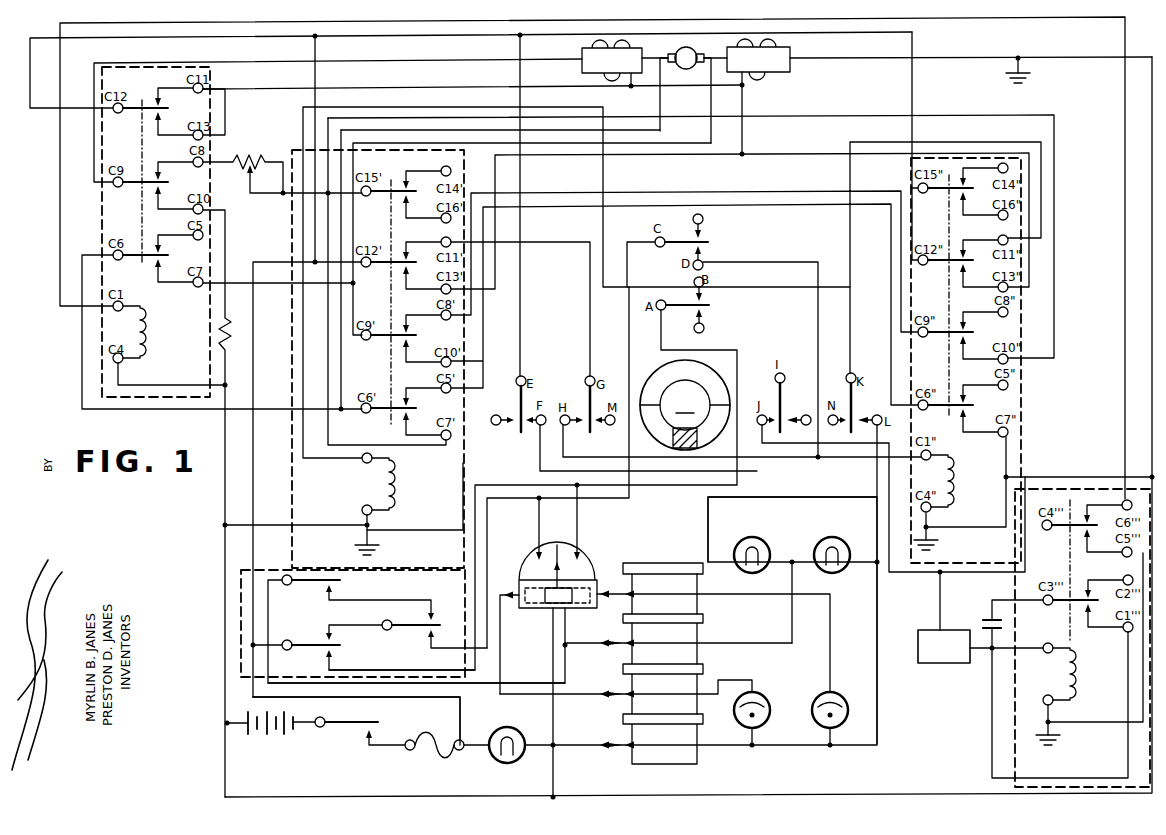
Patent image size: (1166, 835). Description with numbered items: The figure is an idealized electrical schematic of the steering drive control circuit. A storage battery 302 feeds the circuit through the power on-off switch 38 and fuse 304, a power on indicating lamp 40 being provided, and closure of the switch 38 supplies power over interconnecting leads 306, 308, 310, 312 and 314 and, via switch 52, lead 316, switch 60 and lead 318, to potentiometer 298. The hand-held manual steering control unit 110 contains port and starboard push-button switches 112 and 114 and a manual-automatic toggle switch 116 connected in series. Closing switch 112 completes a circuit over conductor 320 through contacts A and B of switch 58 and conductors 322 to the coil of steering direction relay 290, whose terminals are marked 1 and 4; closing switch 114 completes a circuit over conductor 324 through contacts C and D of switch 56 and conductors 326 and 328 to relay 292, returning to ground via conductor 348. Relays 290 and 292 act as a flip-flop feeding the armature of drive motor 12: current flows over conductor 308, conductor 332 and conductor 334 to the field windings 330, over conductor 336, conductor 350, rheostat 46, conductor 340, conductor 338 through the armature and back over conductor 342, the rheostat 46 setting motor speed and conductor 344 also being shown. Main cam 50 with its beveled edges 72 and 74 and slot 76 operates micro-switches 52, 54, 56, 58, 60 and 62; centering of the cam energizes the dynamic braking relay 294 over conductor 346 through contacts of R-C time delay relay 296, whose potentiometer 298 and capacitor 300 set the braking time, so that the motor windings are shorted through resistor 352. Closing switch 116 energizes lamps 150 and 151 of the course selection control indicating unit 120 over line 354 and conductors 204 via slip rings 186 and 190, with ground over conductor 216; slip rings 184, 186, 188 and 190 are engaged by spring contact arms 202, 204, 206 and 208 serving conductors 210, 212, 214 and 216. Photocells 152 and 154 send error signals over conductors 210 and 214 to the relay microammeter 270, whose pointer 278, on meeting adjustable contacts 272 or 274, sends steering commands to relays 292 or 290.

The drive motor 12 is at (690, 48).
The power on-off switch 38 is at (355, 720).
The power on indicating lamp 40 is at (500, 760).
The turning rate control rheostat 46 is at (246, 158).
The main steering shaft control cam 50 is at (685, 405).
The micro-switch 52 is at (513, 410).
The micro-switch 54 is at (588, 400).
The micro-switch 56 is at (716, 239).
The micro-switch 58 is at (715, 308).
The micro-switch 60 is at (788, 403).
The micro-switch 62 is at (844, 400).
The beveled edge portion 72 is at (657, 395).
The beveled edge portion 74 is at (715, 395).
The cam engaging slot 76 is at (675, 437).
The manual steering control unit 110 is at (241, 600).
The port push-button switch 112 is at (312, 640).
The starboard push-button switch 114 is at (414, 632).
The manual-automatic toggle switch 116 is at (318, 582).
The course selection control indicating unit 120 is at (801, 749).
The lamp 150 is at (750, 537).
The lamp 151 is at (826, 537).
The photoelectric cell 152 is at (766, 695).
The photoelectric cell 154 is at (843, 696).
The slip ring 184 is at (700, 603).
The slip ring 186 is at (700, 653).
The slip ring 188 is at (700, 703).
The slip ring 190 is at (700, 760).
The spring contact arm 202 is at (650, 594).
The spring contact arm 204 is at (650, 643).
The spring contact arm 206 is at (650, 694).
The spring contact arm 208 is at (650, 745).
The conductor 210 is at (626, 590).
The conductor 212 is at (621, 642).
The conductor 214 is at (620, 693).
The conductor 216 is at (620, 744).
The relay microammeter control mechanism 270 is at (531, 612).
The starboard contact 272 is at (539, 528).
The port contact 274 is at (578, 520).
The center contact indicator 278 is at (561, 570).
The steering direction motor control relay 290 is at (468, 352).
The steering direction motor control relay 292 is at (1025, 415).
The dynamic braking relay 294 is at (100, 238).
The R-C time delay control relay 296 is at (1014, 698).
The potentiometer 298 is at (937, 664).
The capacitor 300 is at (984, 620).
The storage battery 302 is at (268, 736).
The fuse 304 is at (437, 752).
The conductor 306 is at (444, 695).
The conductor 308 is at (252, 460).
The conductor 310 is at (292, 230).
The conductor 312 is at (480, 31).
The conductor 314 is at (524, 180).
The conductor 316 is at (758, 471).
The conductor 318 is at (888, 480).
The conductor 320 is at (688, 485).
The conductor 322 is at (602, 232).
The conductor 324 is at (487, 518).
The conductor 326 is at (818, 316).
The conductor 328 is at (838, 450).
The field winding 330 is at (582, 62).
The conductor 332 is at (493, 282).
The conductor 334 is at (745, 141).
The conductor 336 is at (680, 87).
The conductor 338 is at (662, 93).
The conductor 340 is at (376, 446).
The conductor 342 is at (711, 125).
The conductor 344 is at (462, 463).
The conductor 346 is at (60, 192).
The conductor 348 is at (1147, 216).
The conductor 350 is at (398, 63).
The shorting resistor 352 is at (230, 325).
The line 354 is at (475, 686).
The relay coil terminal 1 is at (378, 484).
The relay coil terminal 4 is at (367, 496).